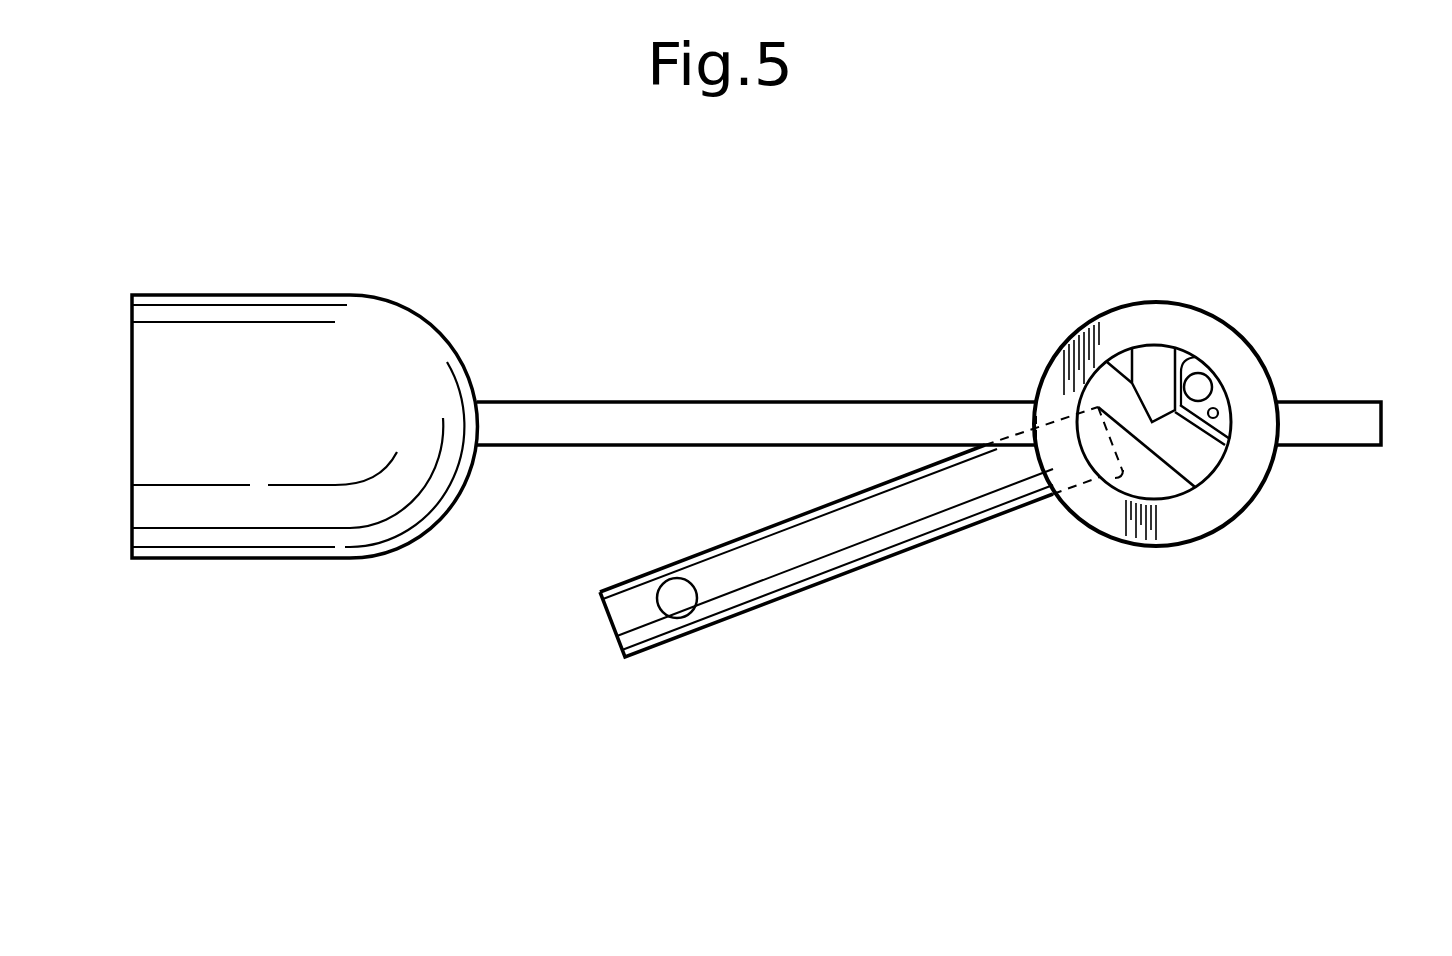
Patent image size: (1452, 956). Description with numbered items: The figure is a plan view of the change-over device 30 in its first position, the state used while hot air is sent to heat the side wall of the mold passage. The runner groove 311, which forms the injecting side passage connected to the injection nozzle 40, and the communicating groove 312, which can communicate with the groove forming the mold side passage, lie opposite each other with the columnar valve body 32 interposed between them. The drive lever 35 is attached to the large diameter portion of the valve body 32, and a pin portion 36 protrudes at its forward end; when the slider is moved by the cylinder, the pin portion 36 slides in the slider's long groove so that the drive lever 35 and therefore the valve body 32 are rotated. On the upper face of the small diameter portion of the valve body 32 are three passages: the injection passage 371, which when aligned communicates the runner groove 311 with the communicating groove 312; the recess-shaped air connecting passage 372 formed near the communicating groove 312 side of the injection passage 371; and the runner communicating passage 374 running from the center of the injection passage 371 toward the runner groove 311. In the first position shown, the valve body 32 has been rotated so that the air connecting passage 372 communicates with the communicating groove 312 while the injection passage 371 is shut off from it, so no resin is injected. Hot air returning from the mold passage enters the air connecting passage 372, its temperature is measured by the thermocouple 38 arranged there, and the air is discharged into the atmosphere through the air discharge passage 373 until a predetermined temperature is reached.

The change-over device 30 is at (912, 285).
The runner groove 311 is at (727, 416).
The communicating groove 312 is at (1344, 410).
The valve body 32 is at (1162, 276).
The drive lever 35 is at (858, 542).
The pin portion 36 is at (677, 600).
The injection passage 371 is at (1192, 453).
The air connecting passage 372 is at (1217, 408).
The air discharge passage 373 is at (1199, 382).
The runner communicating passage 374 is at (1152, 357).
The thermocouple 38 is at (1228, 442).
The injection nozzle 40 is at (250, 358).